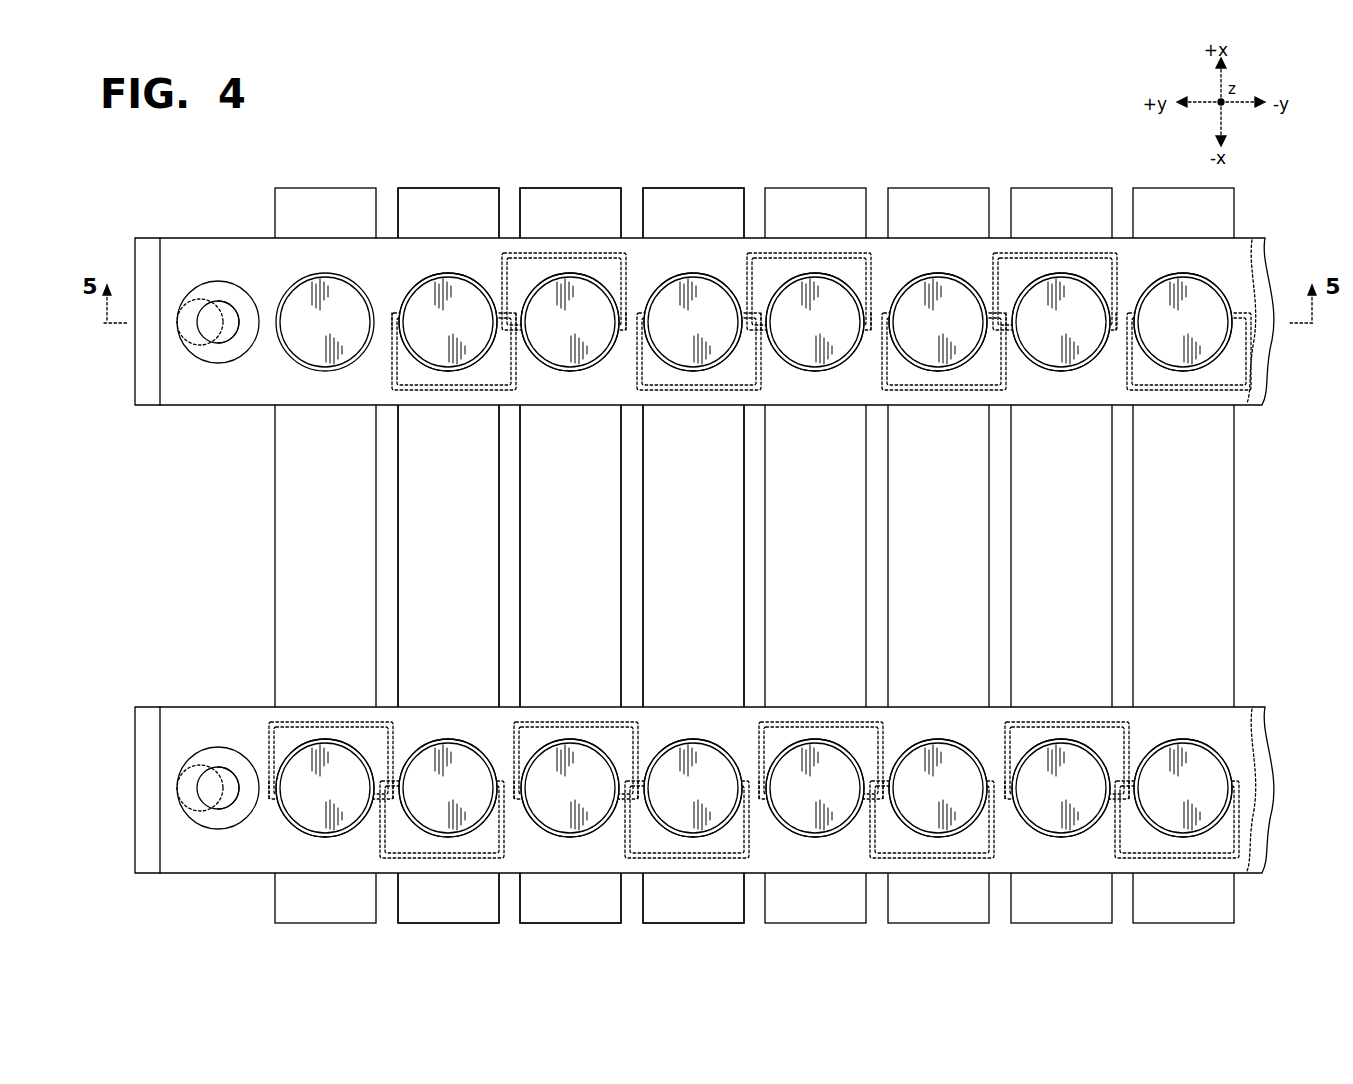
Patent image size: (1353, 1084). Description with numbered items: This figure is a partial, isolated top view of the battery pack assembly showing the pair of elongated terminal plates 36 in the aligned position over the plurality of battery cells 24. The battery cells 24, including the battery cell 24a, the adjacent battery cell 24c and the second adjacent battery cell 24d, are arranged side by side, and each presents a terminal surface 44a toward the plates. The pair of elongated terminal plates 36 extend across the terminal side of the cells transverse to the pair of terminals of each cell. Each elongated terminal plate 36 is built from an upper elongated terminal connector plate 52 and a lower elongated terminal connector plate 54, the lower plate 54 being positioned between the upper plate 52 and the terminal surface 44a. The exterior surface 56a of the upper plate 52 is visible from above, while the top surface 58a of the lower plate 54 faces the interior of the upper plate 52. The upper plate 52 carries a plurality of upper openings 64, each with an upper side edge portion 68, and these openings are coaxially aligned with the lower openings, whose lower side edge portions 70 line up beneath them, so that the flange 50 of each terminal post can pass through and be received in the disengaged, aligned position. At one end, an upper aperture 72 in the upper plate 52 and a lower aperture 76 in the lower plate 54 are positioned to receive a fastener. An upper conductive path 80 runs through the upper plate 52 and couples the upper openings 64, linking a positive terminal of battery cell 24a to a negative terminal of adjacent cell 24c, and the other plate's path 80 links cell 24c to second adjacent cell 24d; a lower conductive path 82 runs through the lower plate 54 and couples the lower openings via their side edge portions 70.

The plurality of battery cells 24 is at (1268, 544).
The battery cell 24a is at (472, 195).
The adjacent battery cell 24c is at (585, 195).
The second adjacent battery cell 24d is at (713, 195).
The pair of elongated terminal plates 36 is at (1278, 210).
The terminal surface 44a is at (305, 575).
The flange 50 is at (313, 334).
The upper elongated terminal connector plate 52 is at (183, 248).
The lower elongated terminal connector plate 54 is at (148, 248).
The exterior surface 56a is at (226, 272).
The top surface 58a is at (232, 332).
The plurality of upper openings 64 is at (325, 273).
The upper side edge portion 68 is at (498, 330).
The lower side edge portion 70 is at (392, 312).
The upper aperture 72 is at (213, 327).
The lower aperture 76 is at (187, 343).
The upper conductive path 80 is at (570, 253).
The lower conductive path 82 is at (440, 390).